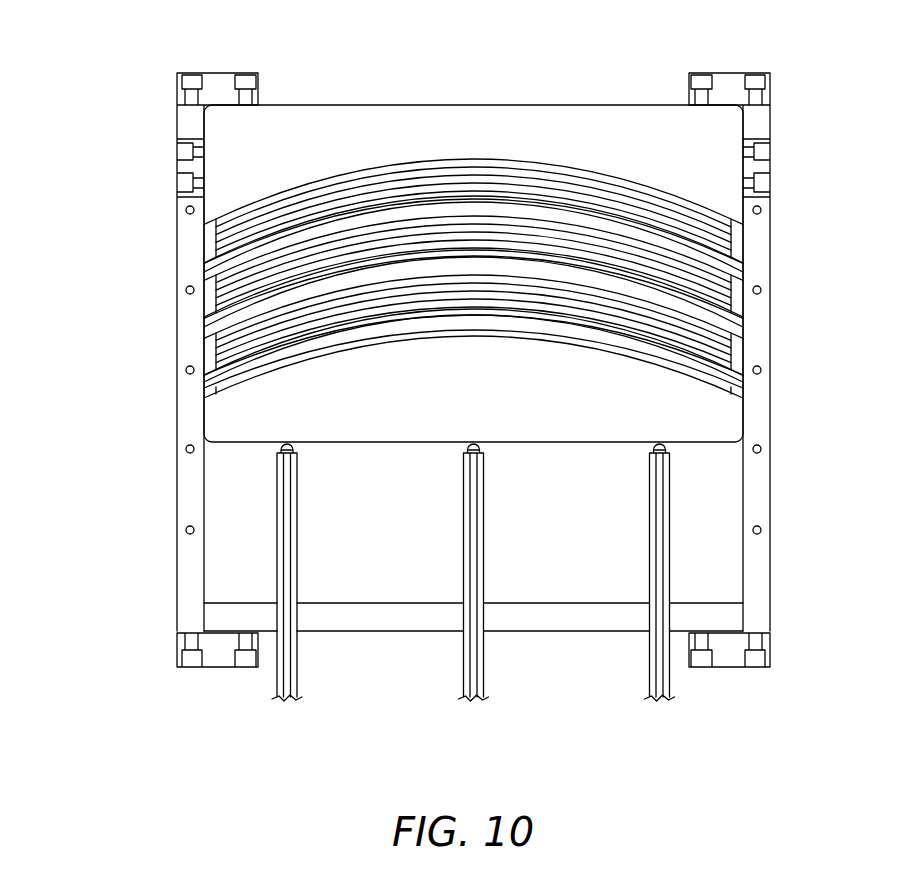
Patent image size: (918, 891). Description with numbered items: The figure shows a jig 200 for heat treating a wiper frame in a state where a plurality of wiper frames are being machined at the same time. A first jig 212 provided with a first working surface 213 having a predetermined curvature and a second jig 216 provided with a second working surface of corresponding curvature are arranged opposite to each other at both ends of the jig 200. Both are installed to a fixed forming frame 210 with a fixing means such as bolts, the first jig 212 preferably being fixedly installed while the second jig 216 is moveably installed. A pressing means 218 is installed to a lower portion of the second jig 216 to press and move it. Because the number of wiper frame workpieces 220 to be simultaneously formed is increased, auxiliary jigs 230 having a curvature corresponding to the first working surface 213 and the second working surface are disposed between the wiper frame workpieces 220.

The jig 200 is at (112, 137).
The fixed forming frame 210 is at (187, 418).
The first jig 212 is at (547, 125).
The first working surface 213 is at (730, 241).
The wiper frame workpiece 220 is at (727, 323).
The auxiliary jig 230 is at (717, 343).
The second jig 216 is at (729, 416).
The pressing means 218 is at (662, 497).